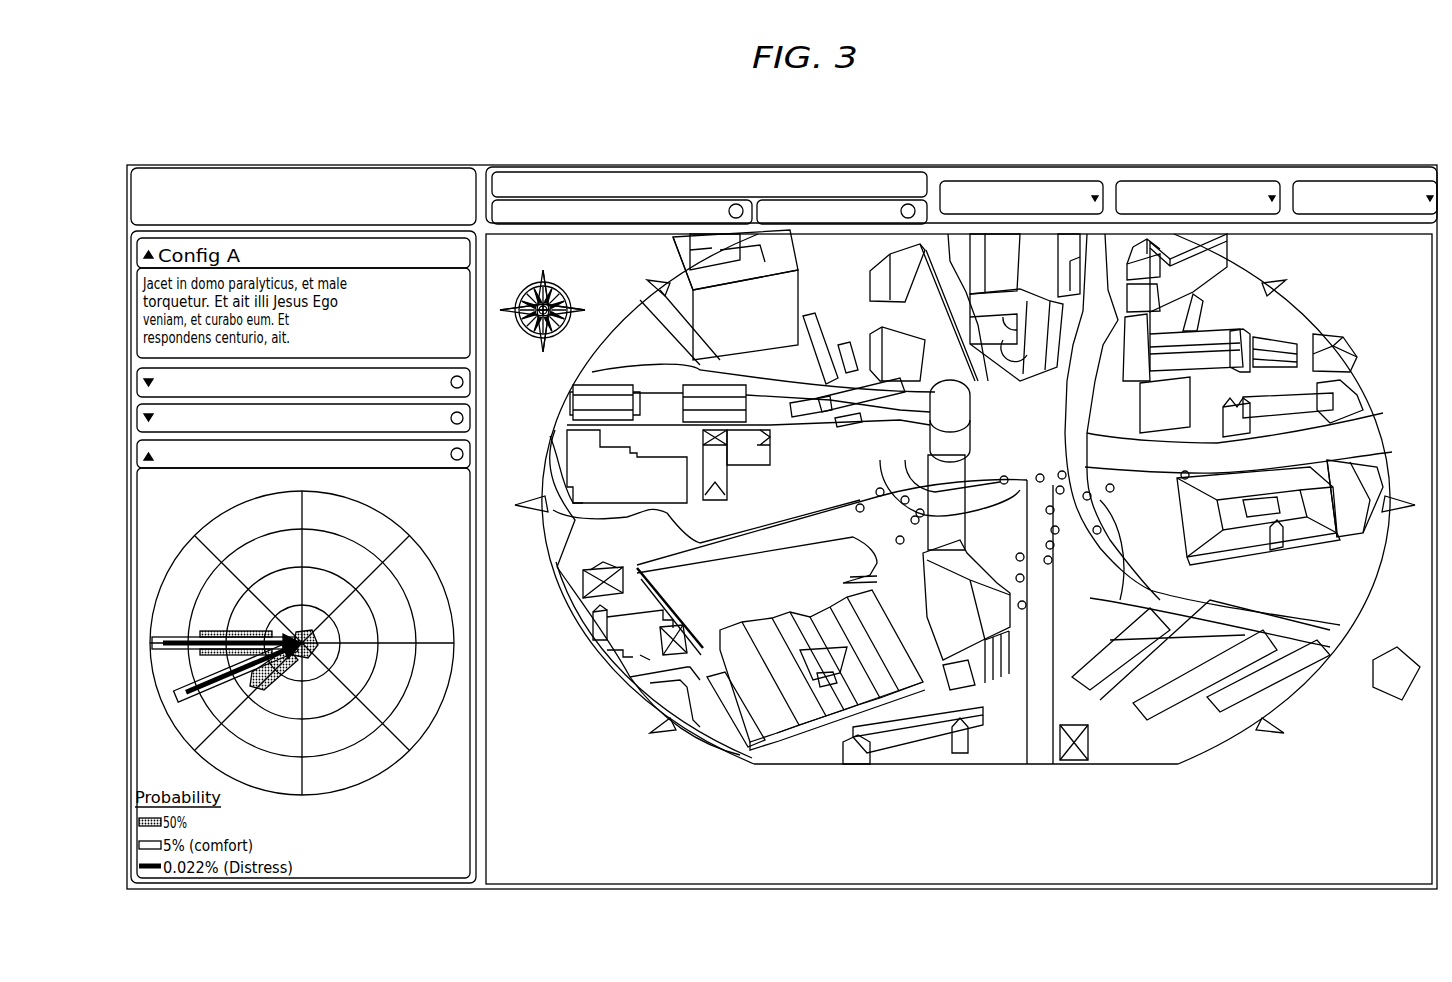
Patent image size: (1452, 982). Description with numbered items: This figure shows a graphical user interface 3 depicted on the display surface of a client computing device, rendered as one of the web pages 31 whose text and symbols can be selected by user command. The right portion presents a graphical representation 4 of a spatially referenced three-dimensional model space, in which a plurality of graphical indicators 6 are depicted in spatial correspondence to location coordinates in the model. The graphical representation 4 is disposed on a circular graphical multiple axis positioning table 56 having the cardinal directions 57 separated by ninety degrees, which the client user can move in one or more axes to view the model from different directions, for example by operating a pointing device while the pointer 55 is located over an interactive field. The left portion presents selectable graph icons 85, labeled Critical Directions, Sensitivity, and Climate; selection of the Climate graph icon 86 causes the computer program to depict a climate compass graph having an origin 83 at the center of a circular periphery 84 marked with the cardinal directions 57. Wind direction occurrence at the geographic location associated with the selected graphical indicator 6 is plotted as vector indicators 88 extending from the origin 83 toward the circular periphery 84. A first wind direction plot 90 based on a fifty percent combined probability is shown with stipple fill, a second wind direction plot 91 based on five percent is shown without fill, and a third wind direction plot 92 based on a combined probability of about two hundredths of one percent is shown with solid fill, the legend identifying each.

The graphical user interface 3 is at (1206, 158).
The graphical representation 4 is at (962, 557).
The graphical indicators 6 is at (1099, 530).
The web pages 31 is at (1386, 176).
The pointer 55 is at (1396, 673).
The graphical multiple axis positioning table 56 is at (1378, 572).
The cardinal directions 57 is at (312, 816).
The origin 83 is at (303, 648).
The circular periphery 84 is at (425, 560).
The selectable graph icons 85 is at (137, 386).
The Climate graph icon 86 is at (160, 516).
The vector indicators 88 is at (178, 640).
The first wind direction plot 90 is at (312, 666).
The second wind direction plot 91 is at (210, 685).
The third wind direction plot 92 is at (178, 650).